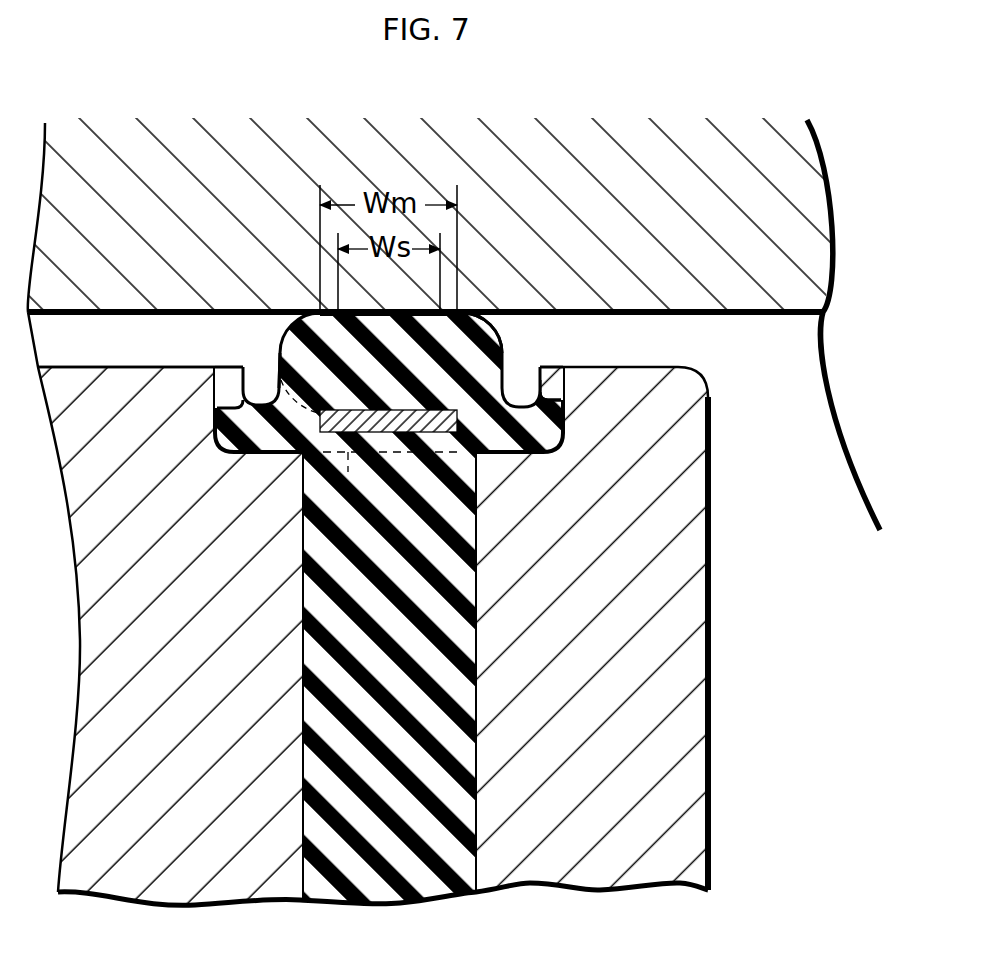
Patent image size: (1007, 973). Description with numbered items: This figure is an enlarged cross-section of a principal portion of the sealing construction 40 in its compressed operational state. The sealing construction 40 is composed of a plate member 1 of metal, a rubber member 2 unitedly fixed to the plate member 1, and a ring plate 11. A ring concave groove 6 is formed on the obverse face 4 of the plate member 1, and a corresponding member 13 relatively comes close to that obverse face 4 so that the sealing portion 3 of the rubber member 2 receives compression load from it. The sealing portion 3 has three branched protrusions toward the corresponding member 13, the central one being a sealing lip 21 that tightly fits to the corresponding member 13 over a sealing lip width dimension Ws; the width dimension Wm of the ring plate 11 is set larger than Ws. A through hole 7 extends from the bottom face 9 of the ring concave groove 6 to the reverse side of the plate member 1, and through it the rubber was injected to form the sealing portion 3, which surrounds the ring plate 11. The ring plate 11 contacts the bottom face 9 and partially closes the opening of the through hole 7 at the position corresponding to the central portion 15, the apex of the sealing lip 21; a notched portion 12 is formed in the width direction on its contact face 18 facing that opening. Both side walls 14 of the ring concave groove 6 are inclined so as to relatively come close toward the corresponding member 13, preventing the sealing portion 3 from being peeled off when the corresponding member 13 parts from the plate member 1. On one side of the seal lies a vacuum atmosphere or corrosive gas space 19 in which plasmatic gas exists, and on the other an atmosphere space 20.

The plate member 1 is at (712, 690).
The rubber member 2 is at (430, 825).
The sealing portion 3 is at (504, 344).
The obverse face 4 is at (167, 366).
The ring concave groove 6 is at (553, 375).
The through hole 7 is at (453, 735).
The bottom face 9 is at (510, 447).
The ring plate 11 is at (275, 387).
The notched portion 12 is at (273, 383).
The corresponding member 13 is at (690, 285).
The side walls 14 is at (217, 418).
The central portion 15 is at (385, 310).
The contact face 18 is at (348, 472).
The vacuum atmosphere or corrosive gas space 19 is at (50, 350).
The atmosphere space 20 is at (638, 352).
The sealing lip 21 is at (480, 310).
The sealing construction 40 is at (760, 623).